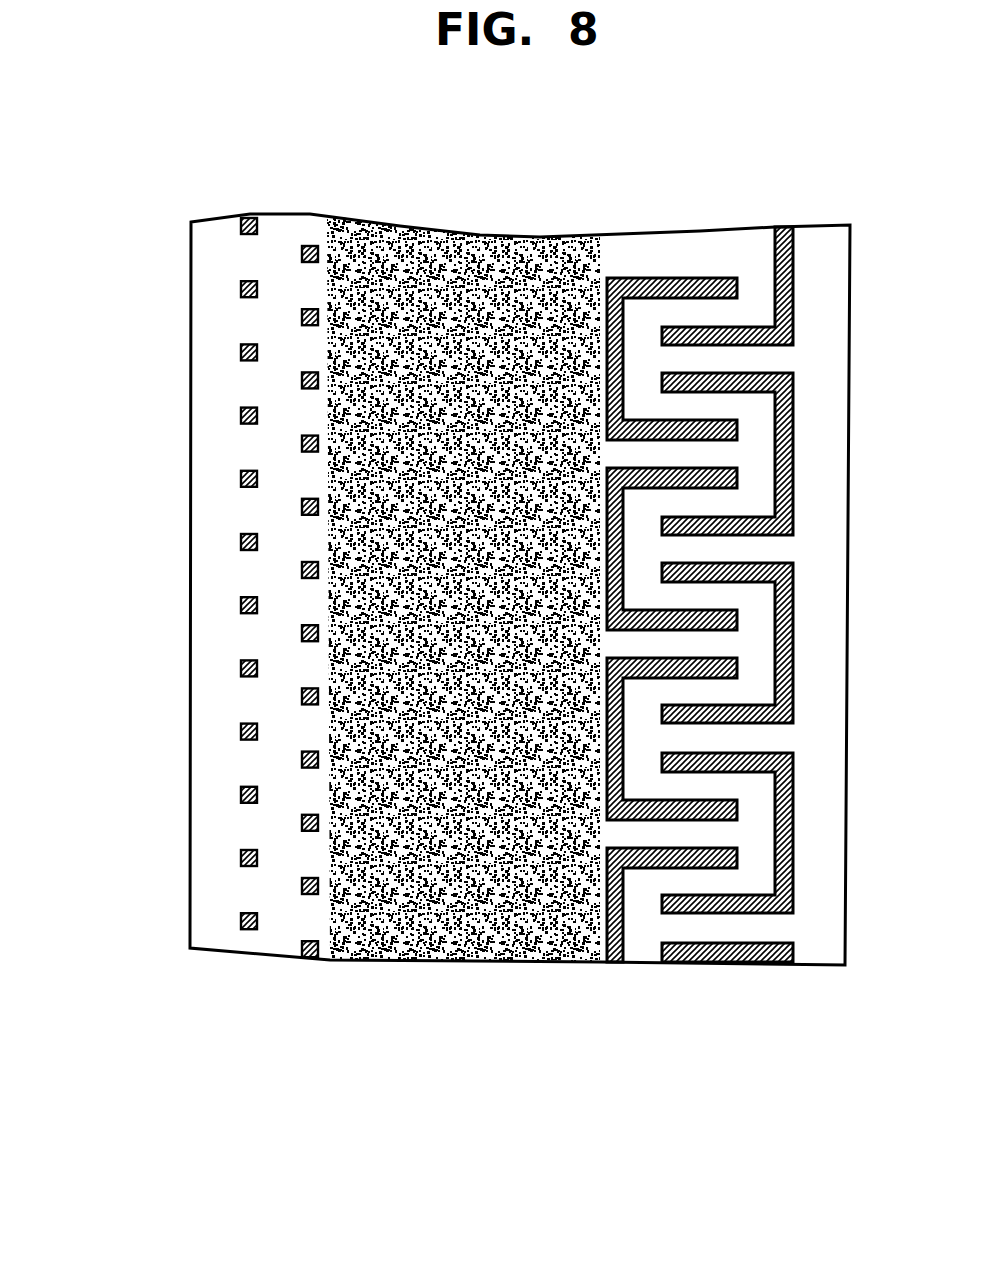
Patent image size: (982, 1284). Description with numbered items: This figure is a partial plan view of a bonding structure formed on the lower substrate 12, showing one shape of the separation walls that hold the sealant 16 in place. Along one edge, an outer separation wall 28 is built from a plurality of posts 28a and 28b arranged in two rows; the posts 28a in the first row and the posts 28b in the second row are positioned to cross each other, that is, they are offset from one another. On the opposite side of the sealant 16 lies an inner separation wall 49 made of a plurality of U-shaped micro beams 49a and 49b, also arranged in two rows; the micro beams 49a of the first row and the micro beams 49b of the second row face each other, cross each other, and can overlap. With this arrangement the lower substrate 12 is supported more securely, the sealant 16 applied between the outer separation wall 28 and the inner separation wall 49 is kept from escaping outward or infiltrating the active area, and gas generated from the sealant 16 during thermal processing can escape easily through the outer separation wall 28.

The lower substrate 12 is at (825, 223).
The sealant 16 is at (443, 930).
The outer separation wall 28 is at (164, 587).
The posts in first row 28a is at (236, 855).
The posts in second row 28b is at (300, 947).
The inner separation wall 49 is at (698, 670).
The micro beams in first row 49a is at (608, 963).
The micro beams in second row 49b is at (736, 638).